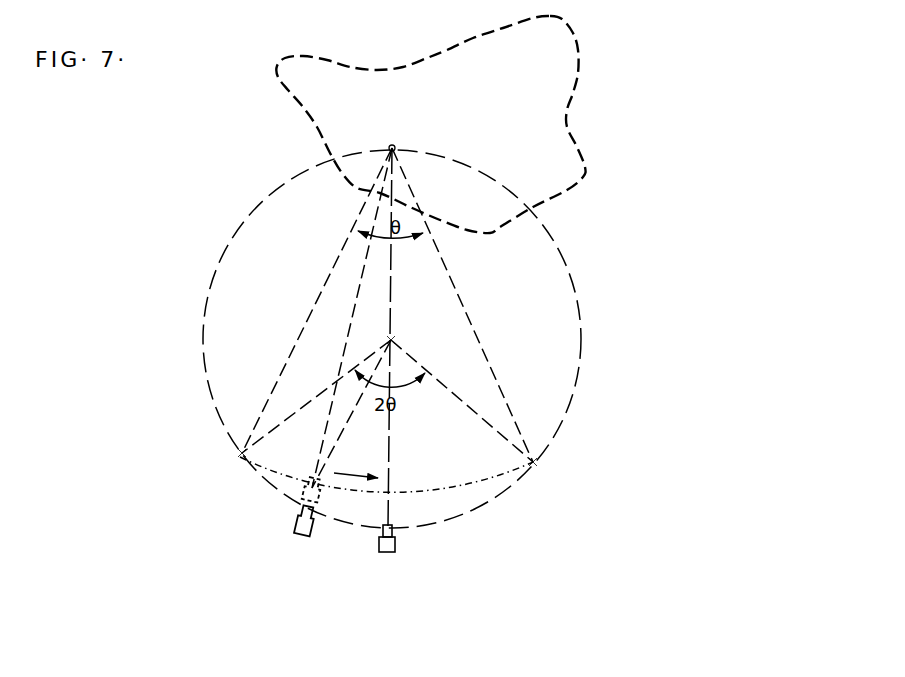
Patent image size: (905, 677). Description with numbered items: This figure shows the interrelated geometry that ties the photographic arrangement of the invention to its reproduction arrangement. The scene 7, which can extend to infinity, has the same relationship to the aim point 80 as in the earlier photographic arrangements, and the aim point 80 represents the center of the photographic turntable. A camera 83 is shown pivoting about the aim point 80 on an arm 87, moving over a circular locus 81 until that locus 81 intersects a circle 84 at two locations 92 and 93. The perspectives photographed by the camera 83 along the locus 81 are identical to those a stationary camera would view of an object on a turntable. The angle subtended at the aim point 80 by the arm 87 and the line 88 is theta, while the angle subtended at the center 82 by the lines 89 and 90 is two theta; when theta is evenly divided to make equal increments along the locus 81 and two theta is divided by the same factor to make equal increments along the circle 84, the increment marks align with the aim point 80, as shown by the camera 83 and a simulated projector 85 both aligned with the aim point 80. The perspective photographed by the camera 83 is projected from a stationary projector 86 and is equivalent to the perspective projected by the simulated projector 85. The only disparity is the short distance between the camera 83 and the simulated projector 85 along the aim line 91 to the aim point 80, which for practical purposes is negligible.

The scene 7 is at (570, 103).
The aim point 80 is at (397, 145).
The circular locus 81 is at (475, 482).
The center of circle 84 82 is at (393, 338).
The camera 83 is at (303, 492).
The circle 84 is at (428, 525).
The simulated projector 85 is at (296, 528).
The stationary projector 86 is at (379, 544).
The arm 87 is at (330, 279).
The line subtending angle theta 88 is at (467, 312).
The line subtending angle two theta 89 is at (323, 400).
The line subtending angle two theta 90 is at (448, 387).
The aim line 91 is at (353, 326).
The intersection location 92 is at (242, 453).
The intersection location 93 is at (533, 462).